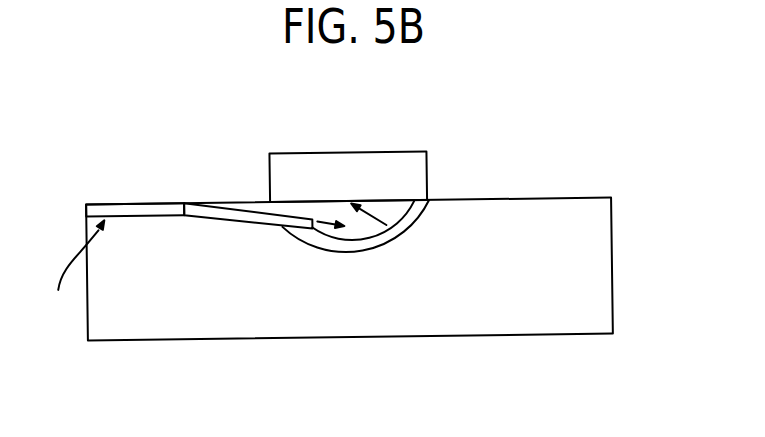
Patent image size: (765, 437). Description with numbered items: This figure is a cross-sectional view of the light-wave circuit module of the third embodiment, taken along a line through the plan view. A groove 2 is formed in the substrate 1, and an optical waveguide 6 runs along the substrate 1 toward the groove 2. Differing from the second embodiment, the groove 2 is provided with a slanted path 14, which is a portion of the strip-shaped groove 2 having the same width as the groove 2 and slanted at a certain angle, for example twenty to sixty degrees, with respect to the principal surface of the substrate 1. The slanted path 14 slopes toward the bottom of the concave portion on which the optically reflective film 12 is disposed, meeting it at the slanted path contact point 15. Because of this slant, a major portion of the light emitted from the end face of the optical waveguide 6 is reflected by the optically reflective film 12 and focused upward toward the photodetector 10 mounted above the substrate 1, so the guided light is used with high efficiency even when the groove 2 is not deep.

The substrate 1 is at (595, 270).
The groove 2 is at (75, 277).
The optical waveguide 6 is at (126, 208).
The photodetector 10 is at (346, 160).
The optically reflective film 12 is at (409, 221).
The slanted path 14 is at (221, 214).
The slanted path contact point 15 is at (310, 228).